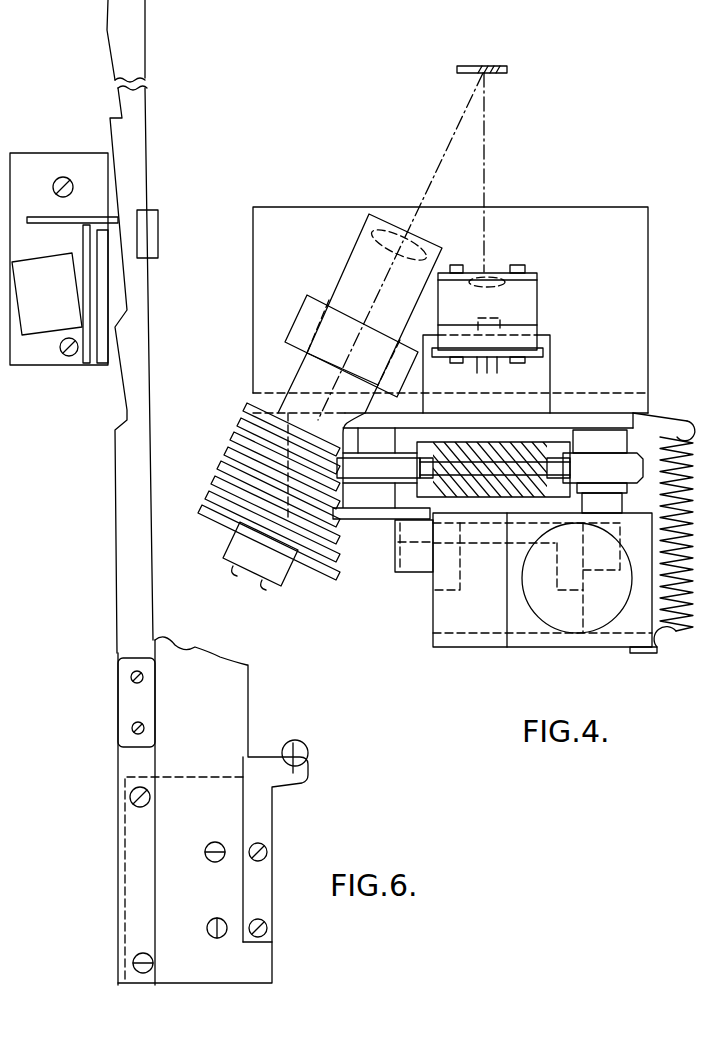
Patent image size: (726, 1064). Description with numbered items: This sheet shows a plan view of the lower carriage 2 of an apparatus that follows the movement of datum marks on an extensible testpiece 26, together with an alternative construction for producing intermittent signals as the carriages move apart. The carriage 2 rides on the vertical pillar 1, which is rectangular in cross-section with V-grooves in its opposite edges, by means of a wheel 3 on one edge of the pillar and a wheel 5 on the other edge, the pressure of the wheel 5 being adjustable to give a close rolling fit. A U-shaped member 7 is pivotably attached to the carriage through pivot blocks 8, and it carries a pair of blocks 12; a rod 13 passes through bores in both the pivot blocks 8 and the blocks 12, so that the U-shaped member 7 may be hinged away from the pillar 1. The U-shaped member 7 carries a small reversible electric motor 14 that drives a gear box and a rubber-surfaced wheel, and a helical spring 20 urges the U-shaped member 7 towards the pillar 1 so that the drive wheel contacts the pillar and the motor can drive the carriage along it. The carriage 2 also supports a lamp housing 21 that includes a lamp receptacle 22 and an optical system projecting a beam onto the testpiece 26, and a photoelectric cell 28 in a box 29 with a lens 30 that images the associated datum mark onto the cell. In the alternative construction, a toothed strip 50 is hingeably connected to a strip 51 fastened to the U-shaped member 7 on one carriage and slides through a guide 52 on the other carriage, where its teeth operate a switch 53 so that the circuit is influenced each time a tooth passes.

In FIG. 4, the vertical pillar 1 is at (553, 428).
In FIG. 4, the carriage 2 is at (600, 240).
In FIG. 4, the wheel 3 is at (597, 427).
In FIG. 4, the wheel 5 is at (387, 472).
In FIG. 4, the U-shaped member 7 is at (522, 627).
In FIG. 6, the U-shaped member 7 is at (262, 967).
In FIG. 4, the pivot blocks 8 is at (416, 566).
In FIG. 4, the blocks 12 is at (445, 585).
In FIG. 4, the rod 13 is at (407, 548).
In FIG. 4, the reversible electric motor 14 is at (572, 628).
In FIG. 4, the helical spring 20 is at (673, 634).
In FIG. 6, the helical spring 20 is at (302, 743).
In FIG. 4, the lamp housing 21 is at (358, 250).
In FIG. 4, the lamp receptacle 22 is at (227, 452).
In FIG. 4, the testpiece 26 is at (500, 66).
In FIG. 4, the photoelectric cell 28 is at (495, 322).
In FIG. 4, the box 29 is at (538, 320).
In FIG. 4, the lens 30 is at (492, 270).
In FIG. 6, the toothed strip 50 is at (133, 452).
In FIG. 6, the strip 51 is at (140, 860).
In FIG. 6, the guide 52 is at (147, 237).
In FIG. 6, the switch 53 is at (53, 323).